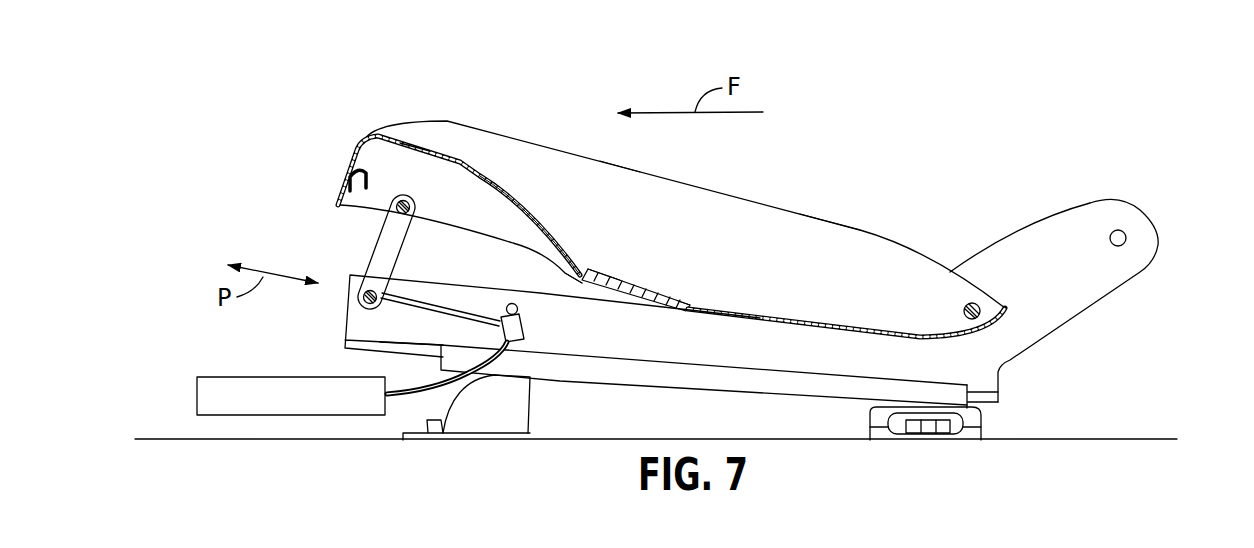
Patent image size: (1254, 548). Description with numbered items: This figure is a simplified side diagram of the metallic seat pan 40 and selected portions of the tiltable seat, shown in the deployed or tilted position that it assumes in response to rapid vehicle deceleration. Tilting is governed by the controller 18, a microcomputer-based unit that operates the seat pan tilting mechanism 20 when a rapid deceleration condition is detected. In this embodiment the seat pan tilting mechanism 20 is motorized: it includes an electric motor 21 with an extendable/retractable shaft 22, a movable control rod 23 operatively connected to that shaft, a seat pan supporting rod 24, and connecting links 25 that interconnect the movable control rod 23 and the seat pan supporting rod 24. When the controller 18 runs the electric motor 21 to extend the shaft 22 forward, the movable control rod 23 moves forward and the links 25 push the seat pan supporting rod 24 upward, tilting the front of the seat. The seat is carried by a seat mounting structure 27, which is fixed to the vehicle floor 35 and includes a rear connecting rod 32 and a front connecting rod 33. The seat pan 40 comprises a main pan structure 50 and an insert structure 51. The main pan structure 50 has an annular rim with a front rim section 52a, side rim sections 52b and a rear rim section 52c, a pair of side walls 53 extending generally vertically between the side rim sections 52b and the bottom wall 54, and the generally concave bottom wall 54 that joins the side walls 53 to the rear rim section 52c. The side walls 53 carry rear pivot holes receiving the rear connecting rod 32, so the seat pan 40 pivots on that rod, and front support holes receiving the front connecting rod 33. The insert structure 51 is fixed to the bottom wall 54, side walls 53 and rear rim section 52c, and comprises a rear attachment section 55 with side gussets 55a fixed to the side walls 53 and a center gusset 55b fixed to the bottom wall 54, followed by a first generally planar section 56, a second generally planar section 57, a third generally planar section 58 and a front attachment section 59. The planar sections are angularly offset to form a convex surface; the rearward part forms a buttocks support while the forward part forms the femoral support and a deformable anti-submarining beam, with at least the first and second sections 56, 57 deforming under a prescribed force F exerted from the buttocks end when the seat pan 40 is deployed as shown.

The controller 18 is at (213, 377).
The seat pan tilting mechanism 20 is at (372, 320).
The electric motor 21 is at (527, 310).
The extendable/retractable shaft 22 is at (443, 305).
The movable control rod 23 is at (384, 288).
The seat pan supporting rod 24 is at (415, 206).
The connecting links 25 is at (380, 250).
The seat mounting structure 27 is at (1075, 361).
The rear connecting rod 32 is at (972, 303).
The front connecting rod 33 is at (518, 304).
The vehicle floor 35 is at (1120, 437).
The metallic seat pan 40 is at (781, 190).
The main pan structure 50 is at (722, 187).
The insert structure 51 is at (538, 208).
The front rim section 52a is at (364, 168).
The side rim section 52b is at (623, 167).
The rear rim section 52c is at (1008, 307).
The side wall 53 is at (835, 240).
The bottom wall 54 is at (801, 318).
The rear attachment section 55 is at (657, 292).
The side gusset 55a is at (620, 275).
The center gusset 55b is at (700, 308).
The first generally planar section 56 is at (563, 247).
The second generally planar section 57 is at (482, 177).
The third generally planar section 58 is at (409, 146).
The front attachment section 59 is at (337, 197).